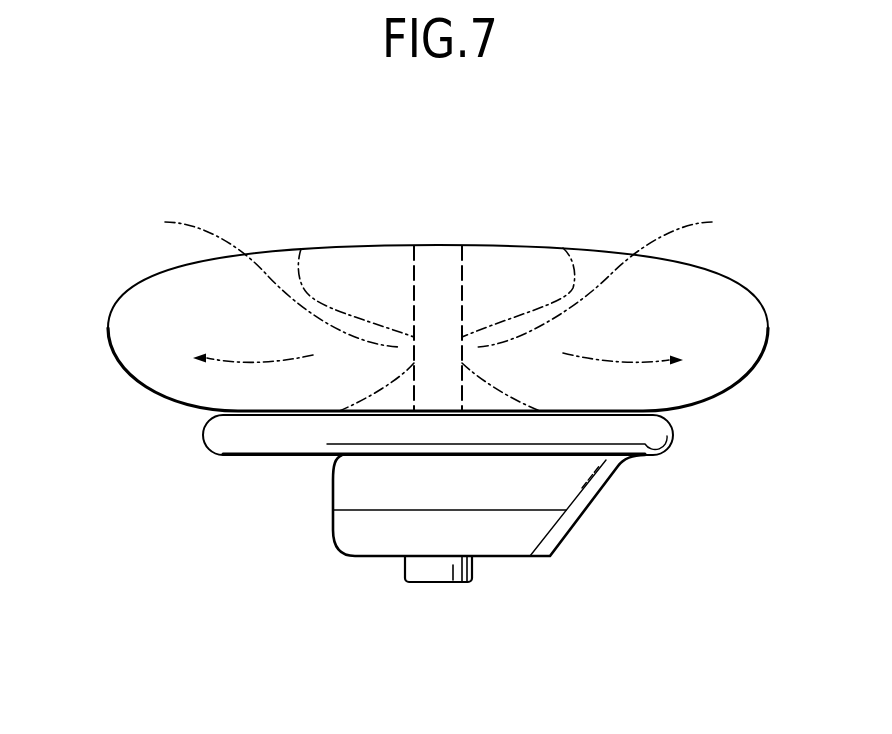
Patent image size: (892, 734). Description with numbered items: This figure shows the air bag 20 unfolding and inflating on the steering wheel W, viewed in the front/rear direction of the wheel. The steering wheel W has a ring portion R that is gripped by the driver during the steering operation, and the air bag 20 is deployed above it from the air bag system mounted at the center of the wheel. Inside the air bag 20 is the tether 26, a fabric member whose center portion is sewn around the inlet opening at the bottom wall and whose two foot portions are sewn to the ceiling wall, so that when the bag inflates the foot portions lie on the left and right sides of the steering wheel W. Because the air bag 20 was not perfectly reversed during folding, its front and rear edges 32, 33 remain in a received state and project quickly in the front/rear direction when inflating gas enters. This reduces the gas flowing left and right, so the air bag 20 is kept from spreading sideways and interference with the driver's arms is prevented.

The air bag 20 is at (592, 260).
The tether 26 is at (466, 278).
The front edge 32 is at (110, 322).
The rear edge 33 is at (766, 317).
The ring portion R is at (303, 437).
The steering wheel W is at (634, 490).